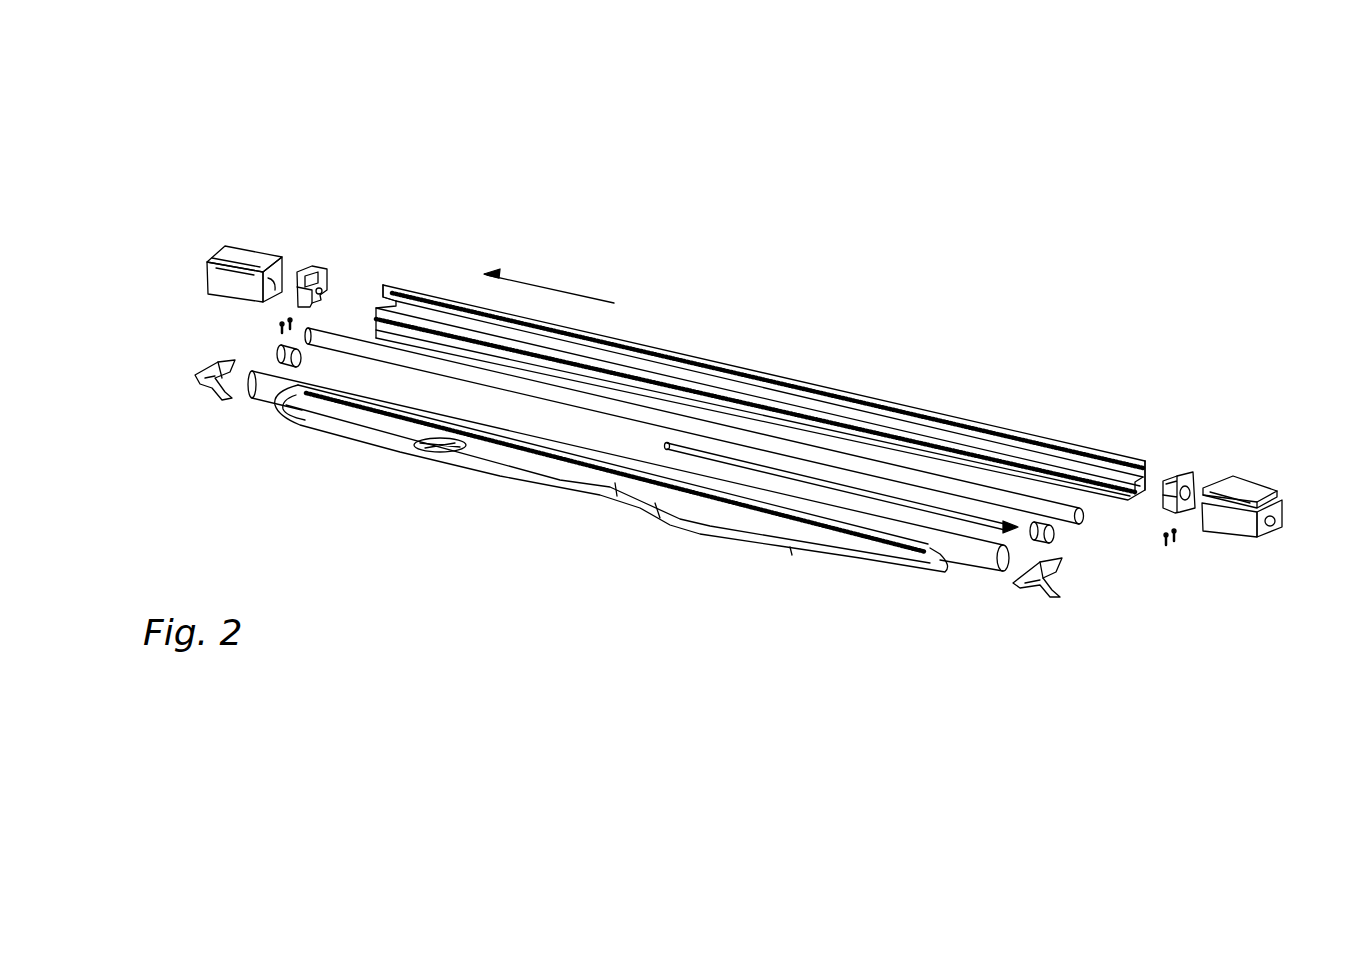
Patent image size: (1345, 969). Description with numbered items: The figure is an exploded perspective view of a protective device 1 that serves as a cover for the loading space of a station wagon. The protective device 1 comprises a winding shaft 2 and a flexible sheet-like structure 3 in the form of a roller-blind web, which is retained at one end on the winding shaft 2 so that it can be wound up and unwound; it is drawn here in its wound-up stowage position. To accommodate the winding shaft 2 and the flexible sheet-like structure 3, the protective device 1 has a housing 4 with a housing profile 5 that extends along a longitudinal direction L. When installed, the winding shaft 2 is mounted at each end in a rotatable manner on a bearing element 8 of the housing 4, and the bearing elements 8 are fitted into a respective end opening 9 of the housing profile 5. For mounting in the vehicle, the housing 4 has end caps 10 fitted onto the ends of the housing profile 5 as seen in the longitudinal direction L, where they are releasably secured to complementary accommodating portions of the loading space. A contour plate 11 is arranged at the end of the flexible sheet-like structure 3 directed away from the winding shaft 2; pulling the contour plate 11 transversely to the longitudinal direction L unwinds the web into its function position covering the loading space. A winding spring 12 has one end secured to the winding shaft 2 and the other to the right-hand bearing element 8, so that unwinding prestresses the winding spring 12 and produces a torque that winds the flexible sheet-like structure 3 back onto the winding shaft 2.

The protective device 1 is at (778, 140).
The winding shaft 2 is at (352, 340).
The flexible sheet-like structure 3 is at (983, 562).
The housing 4 is at (870, 329).
The housing profile 5 is at (722, 361).
The bearing element 8 is at (316, 268).
The end opening 9 is at (373, 277).
The end cap 10 is at (262, 245).
The contour plate 11 is at (490, 453).
The winding spring 12 is at (1012, 534).
The longitudinal direction L is at (537, 268).